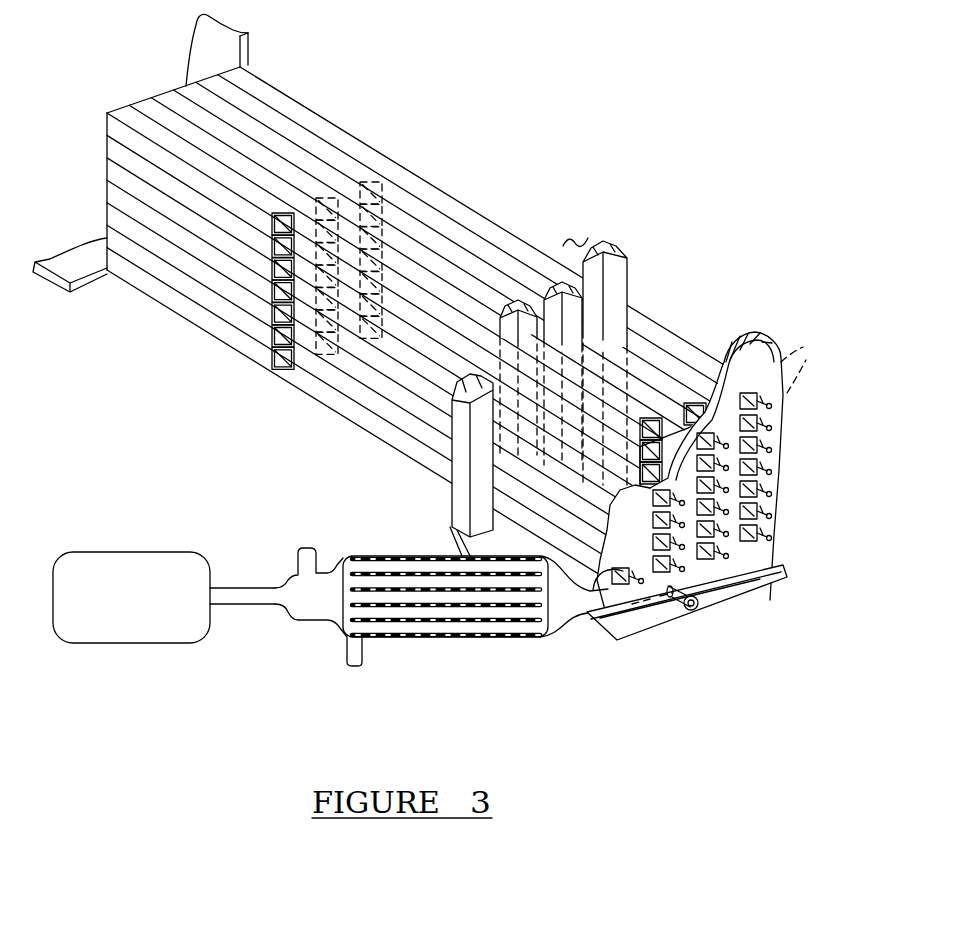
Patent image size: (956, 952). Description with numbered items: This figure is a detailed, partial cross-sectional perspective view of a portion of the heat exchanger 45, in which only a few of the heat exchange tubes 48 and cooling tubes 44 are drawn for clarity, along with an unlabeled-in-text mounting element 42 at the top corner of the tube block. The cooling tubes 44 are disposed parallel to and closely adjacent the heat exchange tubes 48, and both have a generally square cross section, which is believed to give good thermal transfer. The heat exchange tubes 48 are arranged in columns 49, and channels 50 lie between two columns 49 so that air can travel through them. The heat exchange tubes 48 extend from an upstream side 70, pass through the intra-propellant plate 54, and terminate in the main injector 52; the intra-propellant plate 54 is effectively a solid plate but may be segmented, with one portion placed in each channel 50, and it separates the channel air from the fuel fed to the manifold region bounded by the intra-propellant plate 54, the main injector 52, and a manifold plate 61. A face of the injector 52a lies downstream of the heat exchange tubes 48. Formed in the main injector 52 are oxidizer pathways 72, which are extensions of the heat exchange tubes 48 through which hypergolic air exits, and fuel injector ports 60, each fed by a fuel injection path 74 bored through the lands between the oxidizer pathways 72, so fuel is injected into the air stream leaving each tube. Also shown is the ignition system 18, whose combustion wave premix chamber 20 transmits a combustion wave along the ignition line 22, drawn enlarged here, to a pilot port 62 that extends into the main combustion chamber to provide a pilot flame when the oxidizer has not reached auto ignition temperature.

The ignition system 18 is at (442, 606).
The combustion wave premix chamber 20 is at (127, 562).
The ignition line 22 is at (362, 553).
The mounting bracket 42 is at (250, 40).
The cooling tubes 44 is at (160, 292).
The heat exchanger 45 is at (429, 320).
The heat exchange tubes 48 is at (345, 386).
The columns 49 is at (446, 190).
The channels 50 is at (388, 183).
The main injector 52 is at (645, 615).
The face of the injector 52a is at (753, 572).
The intra-propellant plate 54 is at (566, 288).
The fuel injector ports 60 is at (752, 342).
The manifold plate 61 is at (610, 633).
The pilot port 62 is at (697, 613).
The upstream side 70 is at (590, 242).
The oxidizer passages or pathways 72 is at (760, 512).
The fuel injection path 74 is at (807, 347).